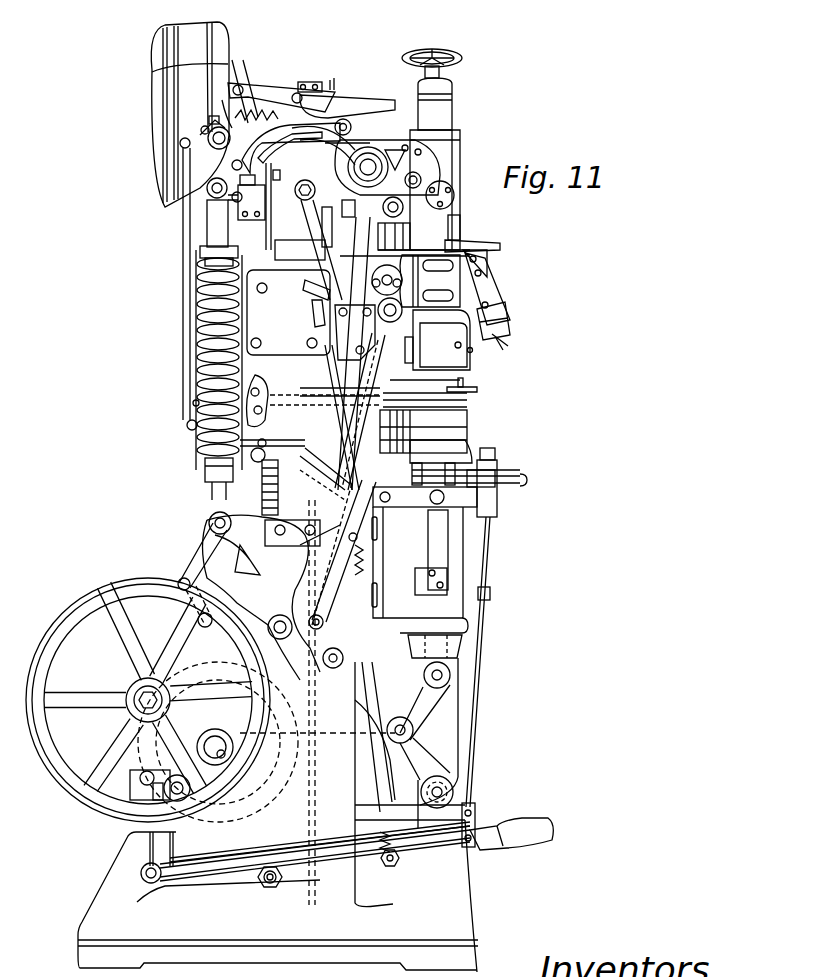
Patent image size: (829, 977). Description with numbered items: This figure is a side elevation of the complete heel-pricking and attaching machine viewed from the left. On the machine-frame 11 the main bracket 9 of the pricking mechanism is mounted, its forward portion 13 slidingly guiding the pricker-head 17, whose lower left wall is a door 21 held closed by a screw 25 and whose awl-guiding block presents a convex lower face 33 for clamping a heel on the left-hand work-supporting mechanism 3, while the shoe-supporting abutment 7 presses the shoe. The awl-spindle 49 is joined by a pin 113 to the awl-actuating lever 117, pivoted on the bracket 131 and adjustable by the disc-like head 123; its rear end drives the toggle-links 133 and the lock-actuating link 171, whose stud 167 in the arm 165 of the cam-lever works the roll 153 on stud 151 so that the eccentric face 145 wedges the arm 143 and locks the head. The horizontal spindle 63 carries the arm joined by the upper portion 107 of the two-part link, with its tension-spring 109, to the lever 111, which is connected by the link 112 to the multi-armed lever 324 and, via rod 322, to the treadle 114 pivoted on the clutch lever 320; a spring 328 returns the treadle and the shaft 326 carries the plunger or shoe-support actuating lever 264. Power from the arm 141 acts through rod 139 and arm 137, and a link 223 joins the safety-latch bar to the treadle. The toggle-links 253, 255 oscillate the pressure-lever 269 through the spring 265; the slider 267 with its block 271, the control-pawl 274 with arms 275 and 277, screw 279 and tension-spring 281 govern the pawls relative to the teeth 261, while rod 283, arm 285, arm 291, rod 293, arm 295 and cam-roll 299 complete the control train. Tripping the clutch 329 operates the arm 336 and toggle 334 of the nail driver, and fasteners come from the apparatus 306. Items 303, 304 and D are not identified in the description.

The left-hand work-supporting mechanism 3 is at (474, 452).
The shoe-supporting abutment 7 is at (510, 322).
The main bracket 9 is at (250, 322).
The machine-frame 11 is at (240, 468).
The forward portion of the bracket 13 is at (490, 286).
The pricker-head 17 is at (508, 343).
The door 21 is at (456, 357).
The screw 25 is at (473, 350).
The lower face of the block 33 is at (465, 386).
The awl-spindle 49 is at (498, 247).
The horizontal spindle 63 is at (396, 278).
The upper portion of the two-part link 107 is at (272, 205).
The tension-spring 109 is at (325, 230).
The lever 111 is at (368, 160).
The link 112 is at (328, 360).
The pin 113 is at (458, 224).
The treadle 114 is at (552, 818).
The awl-actuating lever 117 is at (405, 200).
The disc-like head 123 is at (452, 202).
The bracket 131 is at (395, 223).
The toggle-link 133 is at (315, 190).
The arm 137 is at (455, 347).
The rod 139 is at (352, 632).
The arm 141 is at (352, 648).
The arm 143 is at (232, 262).
The eccentric face 145 is at (220, 278).
The stud 151 is at (312, 292).
The roll 153 is at (378, 308).
The arm 165 is at (318, 302).
The stud 167 is at (315, 310).
The lock-actuating link 171 is at (372, 283).
The link 223 is at (478, 673).
The toggle-link 253 is at (190, 595).
The toggle-link 255 is at (210, 545).
The teeth 261 is at (238, 228).
The plunger or shoe-support actuating lever 264 is at (207, 208).
The spring 265 is at (200, 355).
The slider 267 is at (230, 128).
The pressure-lever 269 is at (335, 110).
The block 271 is at (242, 125).
The control-pawl 274 is at (182, 138).
The arm 275 is at (212, 132).
The arm 277 is at (200, 148).
The screw 279 is at (212, 118).
The tension-spring 281 is at (262, 128).
The rod 283 is at (190, 336).
The arm 285 is at (190, 427).
The arm 291 is at (200, 400).
The rod 293 is at (270, 437).
The arm 295 is at (400, 416).
The cam-roll 299 is at (400, 438).
The bracket plate 303 is at (405, 500).
The curved arm 304 is at (306, 148).
The fastener-delivering apparatus 306 is at (178, 62).
The clutch lever 320 is at (240, 880).
The rod 322 is at (306, 812).
The multi-armed lever 324 is at (336, 476).
The shaft 326 is at (382, 140).
The spring 328 is at (289, 172).
The clutch 329 is at (112, 800).
The toggle 334 is at (438, 688).
The arm 336 is at (333, 762).
The die plate D is at (452, 392).